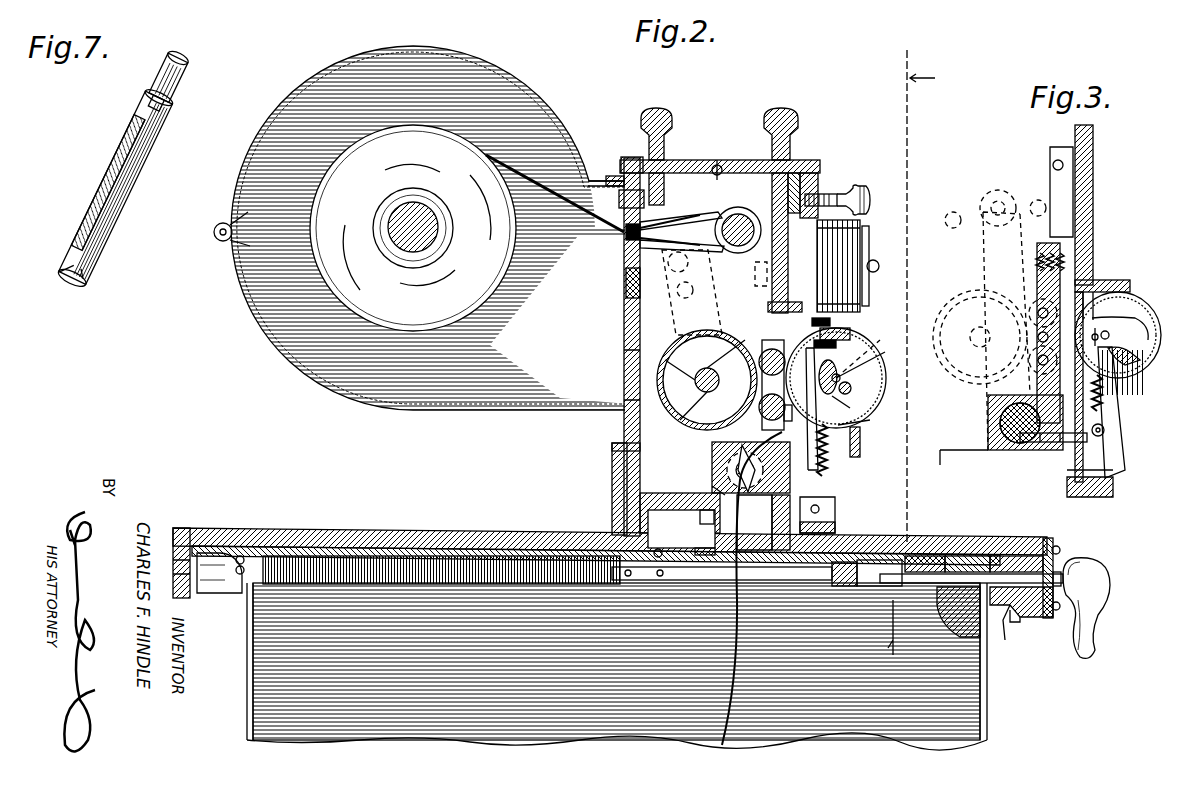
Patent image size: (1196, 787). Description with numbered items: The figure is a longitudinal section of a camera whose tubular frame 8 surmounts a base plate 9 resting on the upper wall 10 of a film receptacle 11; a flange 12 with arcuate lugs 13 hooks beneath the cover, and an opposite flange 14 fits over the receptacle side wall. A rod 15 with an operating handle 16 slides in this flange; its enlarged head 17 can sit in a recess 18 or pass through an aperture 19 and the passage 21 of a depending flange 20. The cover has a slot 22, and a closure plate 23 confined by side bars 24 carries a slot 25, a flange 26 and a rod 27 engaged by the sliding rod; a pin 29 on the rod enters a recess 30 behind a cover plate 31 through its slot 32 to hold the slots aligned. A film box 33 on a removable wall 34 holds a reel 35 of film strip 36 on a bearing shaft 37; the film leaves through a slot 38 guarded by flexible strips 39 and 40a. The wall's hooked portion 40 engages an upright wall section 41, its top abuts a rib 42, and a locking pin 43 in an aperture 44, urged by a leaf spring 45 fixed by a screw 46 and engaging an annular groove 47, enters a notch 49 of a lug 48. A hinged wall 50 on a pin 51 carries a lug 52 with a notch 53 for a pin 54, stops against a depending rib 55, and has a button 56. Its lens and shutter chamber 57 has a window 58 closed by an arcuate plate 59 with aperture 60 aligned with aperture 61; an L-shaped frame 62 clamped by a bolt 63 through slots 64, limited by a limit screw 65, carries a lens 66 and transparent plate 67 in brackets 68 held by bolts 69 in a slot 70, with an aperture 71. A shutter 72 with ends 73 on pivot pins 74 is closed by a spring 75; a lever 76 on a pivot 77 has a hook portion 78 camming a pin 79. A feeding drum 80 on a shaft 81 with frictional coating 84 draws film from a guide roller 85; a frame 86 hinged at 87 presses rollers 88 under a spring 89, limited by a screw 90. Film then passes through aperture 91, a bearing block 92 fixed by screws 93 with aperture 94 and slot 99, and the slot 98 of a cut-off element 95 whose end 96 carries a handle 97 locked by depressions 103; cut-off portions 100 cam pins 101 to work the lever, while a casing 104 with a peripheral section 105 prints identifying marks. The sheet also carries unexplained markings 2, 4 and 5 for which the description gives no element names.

In FIG. 3, the phantom gear 2 is at (995, 209).
In FIG. 2, the section line 4 is at (907, 351).
In FIG. 2, the housing box 5 is at (600, 680).
In FIG. 2, the tubular frame 8 is at (703, 162).
In FIG. 2, the base plate 9 is at (510, 532).
In FIG. 2, the upper wall 10 is at (552, 546).
In FIG. 2, the film receptacle 11 is at (247, 657).
In FIG. 2, the flange 12 is at (173, 540).
In FIG. 2, the lug 13 is at (218, 588).
In FIG. 2, the flange 14 is at (1020, 625).
In FIG. 2, the rod 15 is at (1030, 587).
In FIG. 2, the operating handle 16 is at (1092, 576).
In FIG. 2, the enlarged head 17 is at (938, 574).
In FIG. 2, the recess 18 is at (1010, 560).
In FIG. 2, the aperture 19 is at (984, 598).
In FIG. 2, the depending flange 20 is at (972, 556).
In FIG. 2, the passage 21 is at (950, 556).
In FIG. 2, the slot 22 is at (712, 556).
In FIG. 2, the closure plate 23 is at (660, 570).
In FIG. 2, the side bars 24 is at (681, 529).
In FIG. 2, the slot 25 is at (728, 560).
In FIG. 2, the flange 26 is at (860, 562).
In FIG. 2, the rod 27 is at (900, 560).
In FIG. 2, the pin 29 is at (1028, 618).
In FIG. 2, the recess 30 is at (1048, 540).
In FIG. 2, the cover plate 31 is at (1058, 548).
In FIG. 2, the slot 32 is at (1060, 576).
In FIG. 2, the film box 33 is at (543, 100).
In FIG. 2, the removable wall 34 is at (624, 332).
In FIG. 2, the reel 35 is at (432, 150).
In FIG. 2, the film strip 36 is at (560, 172).
In FIG. 2, the bearing shaft 37 is at (432, 210).
In FIG. 2, the slot 38 is at (625, 236).
In FIG. 2, the flexible strip 39 is at (626, 278).
In FIG. 2, the hooked portion 40 is at (627, 458).
In FIG. 2, the flexible strip 40a is at (624, 198).
In FIG. 2, the upright wall section 41 is at (612, 451).
In FIG. 2, the rib 42 is at (630, 160).
In FIG. 2, the locking pin 43 is at (660, 110).
In FIG. 2, the aperture 44 is at (668, 162).
In FIG. 2, the leaf spring 45 is at (681, 209).
In FIG. 2, the screw 46 is at (720, 167).
In FIG. 2, the annular groove 47 is at (610, 172).
In FIG. 2, the lug 48 is at (682, 227).
In FIG. 2, the notch 49 is at (593, 185).
In FIG. 2, the wall 50 is at (812, 200).
In FIG. 2, the pin 51 is at (832, 518).
In FIG. 2, the lug 52 is at (750, 212).
In FIG. 3, the lug 52 is at (1050, 160).
In FIG. 2, the notch 53 is at (830, 206).
In FIG. 2, the pin 54 is at (782, 110).
In FIG. 2, the depending rib 55 is at (800, 190).
In FIG. 2, the button 56 is at (866, 200).
In FIG. 2, the lens and shutter chamber 57 is at (868, 352).
In FIG. 3, the lens and shutter chamber 57 is at (1093, 292).
In FIG. 2, the window 58 is at (852, 328).
In FIG. 2, the arcuate plate 59 is at (880, 357).
In FIG. 3, the arcuate plate 59 is at (1135, 296).
In FIG. 2, the aperture 60 is at (875, 392).
In FIG. 3, the aperture 60 is at (1140, 318).
In FIG. 3, the aperture 61 is at (1098, 311).
In FIG. 2, the L-shaped frame 62 is at (815, 417).
In FIG. 2, the bolt 63 is at (840, 328).
In FIG. 2, the slots 64 is at (880, 340).
In FIG. 2, the limit screw 65 is at (885, 352).
In FIG. 2, the lens 66 is at (853, 389).
In FIG. 2, the transparent plate 67 is at (846, 405).
In FIG. 2, the brackets 68 is at (858, 375).
In FIG. 2, the bolts 69 is at (870, 420).
In FIG. 2, the slot 70 is at (860, 434).
In FIG. 2, the aperture 71 is at (792, 420).
In FIG. 3, the shutter 72 is at (1140, 354).
In FIG. 3, the shutter ends 73 is at (1135, 318).
In FIG. 3, the pivot pins 74 is at (1107, 330).
In FIG. 2, the spring 75 is at (828, 455).
In FIG. 3, the spring 75 is at (1108, 392).
In FIG. 3, the lever 76 is at (1115, 408).
In FIG. 3, the pivot 77 is at (1105, 432).
In FIG. 3, the hook portion 78 is at (1140, 370).
In FIG. 3, the pin 79 is at (1100, 330).
In FIG. 2, the feeding drum 80 is at (690, 362).
In FIG. 2, the shaft 81 is at (695, 385).
In FIG. 2, the frictional coating 84 is at (642, 368).
In FIG. 2, the guide roller 85 is at (722, 230).
In FIG. 2, the frame 86 is at (755, 272).
In FIG. 3, the frame 86 is at (1040, 294).
In FIG. 2, the hinge 87 is at (862, 226).
In FIG. 3, the hinge 87 is at (1053, 165).
In FIG. 2, the rollers 88 is at (775, 349).
In FIG. 3, the rollers 88 is at (1037, 335).
In FIG. 3, the spring 89 is at (1040, 262).
In FIG. 2, the screw 90 is at (768, 300).
In FIG. 2, the aperture 91 is at (708, 520).
In FIG. 2, the bearing block 92 is at (714, 470).
In FIG. 3, the bearing block 92 is at (988, 438).
In FIG. 2, the screws 93 is at (712, 490).
In FIG. 2, the aperture 94 is at (762, 523).
In FIG. 7, the cut-off element 95 is at (138, 199).
In FIG. 2, the cut-off element 95 is at (736, 472).
In FIG. 7, the end 96 is at (187, 55).
In FIG. 2, the operating handle 97 is at (674, 300).
In FIG. 3, the operating handle 97 is at (984, 262).
In FIG. 7, the slot 98 is at (85, 171).
In FIG. 2, the slot 98 is at (728, 462).
In FIG. 2, the slot 99 is at (740, 448).
In FIG. 7, the cut-off portions 100 is at (136, 215).
In FIG. 3, the cut-off portions 100 is at (1010, 412).
In FIG. 3, the pins 101 is at (1046, 444).
In FIG. 2, the depressions 103 is at (700, 275).
In FIG. 2, the casing 104 is at (868, 258).
In FIG. 2, the peripheral section 105 is at (876, 268).